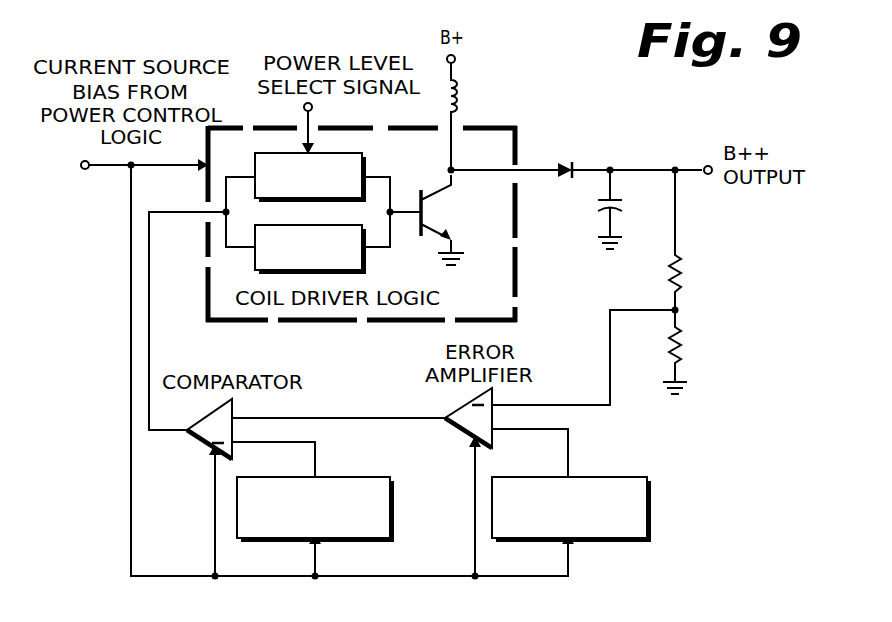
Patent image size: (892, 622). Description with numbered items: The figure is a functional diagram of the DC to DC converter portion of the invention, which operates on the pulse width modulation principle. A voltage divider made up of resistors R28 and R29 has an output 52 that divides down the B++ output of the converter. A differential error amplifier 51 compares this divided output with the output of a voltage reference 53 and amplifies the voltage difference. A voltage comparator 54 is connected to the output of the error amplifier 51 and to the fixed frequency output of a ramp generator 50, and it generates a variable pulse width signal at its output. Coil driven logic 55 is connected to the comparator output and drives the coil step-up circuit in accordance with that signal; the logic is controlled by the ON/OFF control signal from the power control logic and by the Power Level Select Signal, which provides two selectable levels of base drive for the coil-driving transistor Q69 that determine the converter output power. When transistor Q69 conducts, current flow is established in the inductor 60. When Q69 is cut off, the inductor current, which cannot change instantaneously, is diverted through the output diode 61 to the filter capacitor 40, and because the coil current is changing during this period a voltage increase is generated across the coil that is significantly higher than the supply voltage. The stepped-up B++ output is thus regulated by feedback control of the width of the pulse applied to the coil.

The coil driven logic 55 is at (208, 322).
The transistor Q69 is at (440, 212).
The inductor 60 is at (460, 100).
The output diode 61 is at (560, 160).
The filter capacitor 40 is at (624, 208).
The resistor R28 is at (683, 275).
The output 52 is at (680, 310).
The resistor R29 is at (683, 347).
The voltage comparator 54 is at (200, 440).
The differential error amplifier 51 is at (458, 432).
The ramp generator 50 is at (367, 477).
The voltage reference 53 is at (627, 477).